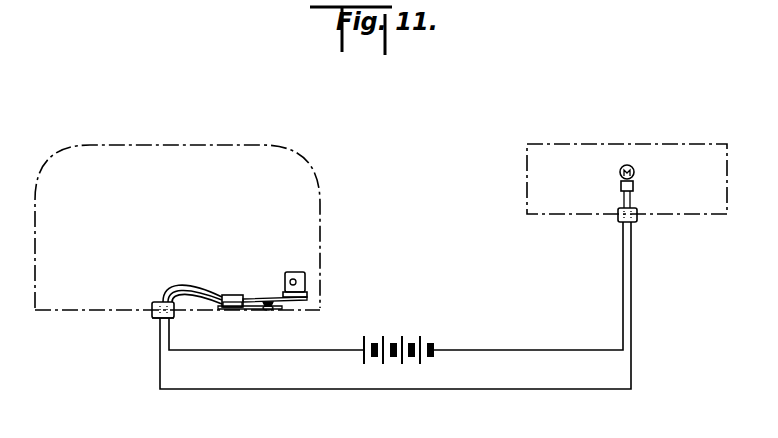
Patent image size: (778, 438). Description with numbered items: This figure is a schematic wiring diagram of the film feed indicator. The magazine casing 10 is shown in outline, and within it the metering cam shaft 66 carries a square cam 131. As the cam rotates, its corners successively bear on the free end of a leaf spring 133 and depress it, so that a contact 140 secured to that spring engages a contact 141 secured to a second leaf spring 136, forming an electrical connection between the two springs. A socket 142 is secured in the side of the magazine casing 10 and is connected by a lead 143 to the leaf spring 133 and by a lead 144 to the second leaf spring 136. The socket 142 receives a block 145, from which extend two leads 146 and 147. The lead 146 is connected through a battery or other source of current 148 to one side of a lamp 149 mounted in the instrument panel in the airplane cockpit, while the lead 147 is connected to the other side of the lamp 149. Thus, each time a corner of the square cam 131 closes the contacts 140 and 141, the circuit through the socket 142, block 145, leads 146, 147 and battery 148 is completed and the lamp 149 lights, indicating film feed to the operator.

The magazine casing 10 is at (47, 181).
The metering cam shaft 66 is at (293, 279).
The square cam 131 is at (303, 277).
The leaf spring 133 is at (253, 295).
The second leaf spring 136 is at (262, 306).
The contact 140 is at (278, 302).
The contact 141 is at (268, 309).
The socket 142 is at (151, 305).
The lead 143 is at (181, 287).
The lead 144 is at (166, 291).
The block 145 is at (151, 316).
The lead 146 is at (160, 373).
The lead 147 is at (170, 332).
The battery 148 is at (407, 335).
The lamp 149 is at (620, 177).